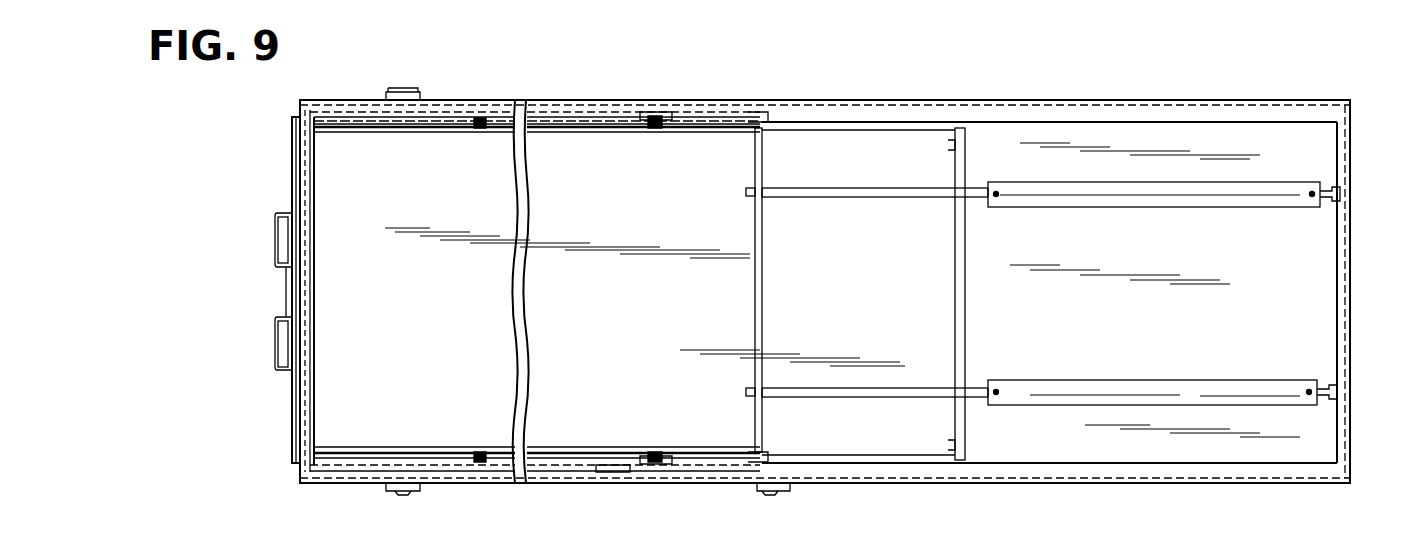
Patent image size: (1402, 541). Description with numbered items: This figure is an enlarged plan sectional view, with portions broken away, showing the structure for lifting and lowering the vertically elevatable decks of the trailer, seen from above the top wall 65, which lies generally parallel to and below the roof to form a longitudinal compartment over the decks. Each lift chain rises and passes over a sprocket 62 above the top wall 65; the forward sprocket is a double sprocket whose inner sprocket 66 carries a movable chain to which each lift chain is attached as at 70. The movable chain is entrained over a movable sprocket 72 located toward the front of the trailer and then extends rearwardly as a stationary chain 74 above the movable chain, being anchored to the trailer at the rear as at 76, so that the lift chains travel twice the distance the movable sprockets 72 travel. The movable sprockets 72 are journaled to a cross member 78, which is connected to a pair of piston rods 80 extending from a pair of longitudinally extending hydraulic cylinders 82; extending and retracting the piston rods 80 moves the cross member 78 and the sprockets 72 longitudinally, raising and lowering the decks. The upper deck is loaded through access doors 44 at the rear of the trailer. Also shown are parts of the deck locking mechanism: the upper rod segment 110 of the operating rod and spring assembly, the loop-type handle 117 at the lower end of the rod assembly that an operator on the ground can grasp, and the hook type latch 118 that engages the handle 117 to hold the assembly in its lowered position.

The access doors 44 is at (296, 394).
The sprocket 62 is at (645, 472).
The top wall 65 is at (662, 296).
The inner sprocket 66 is at (480, 117).
The attachment of lift chain to movable chain 70 is at (672, 112).
The movable sprocket 72 is at (762, 114).
The stationary chain 74 is at (370, 455).
The anchor 76 is at (321, 101).
The cross member 78 is at (757, 297).
The piston rods 80 is at (898, 192).
The hydraulic cylinders 82 is at (1260, 200).
The upper rod segment 110 is at (790, 489).
The loop-type handle 117 is at (418, 91).
The hook type latch 118 is at (398, 91).